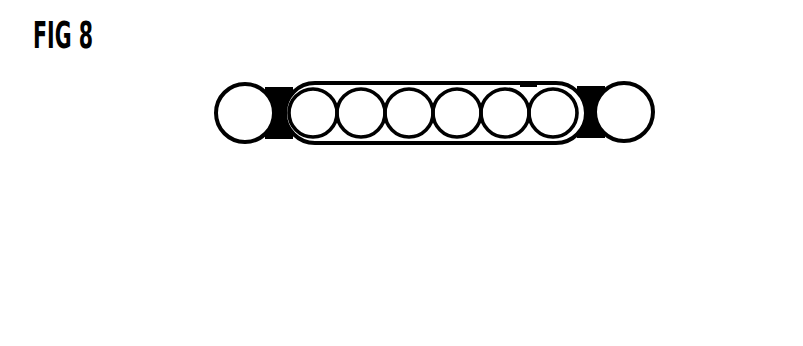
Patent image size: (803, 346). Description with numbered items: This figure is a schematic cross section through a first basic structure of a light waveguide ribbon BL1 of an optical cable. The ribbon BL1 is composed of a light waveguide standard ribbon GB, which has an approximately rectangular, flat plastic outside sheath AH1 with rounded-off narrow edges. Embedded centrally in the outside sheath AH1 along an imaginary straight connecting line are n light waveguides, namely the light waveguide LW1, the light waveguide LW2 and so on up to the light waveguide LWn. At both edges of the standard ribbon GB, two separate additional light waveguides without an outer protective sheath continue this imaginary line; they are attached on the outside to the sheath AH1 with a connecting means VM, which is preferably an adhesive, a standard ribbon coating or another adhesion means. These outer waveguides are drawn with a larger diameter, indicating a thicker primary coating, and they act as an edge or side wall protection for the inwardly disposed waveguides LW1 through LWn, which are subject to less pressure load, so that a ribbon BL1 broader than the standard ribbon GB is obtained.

The light waveguide LW1 is at (313, 126).
The light waveguide LW2 is at (362, 122).
The light waveguide LWn is at (557, 123).
The outside sheath AH1 is at (433, 92).
The light waveguide standard ribbon GB is at (527, 93).
The connecting means VM is at (588, 85).
The ribbon BL1 is at (423, 127).